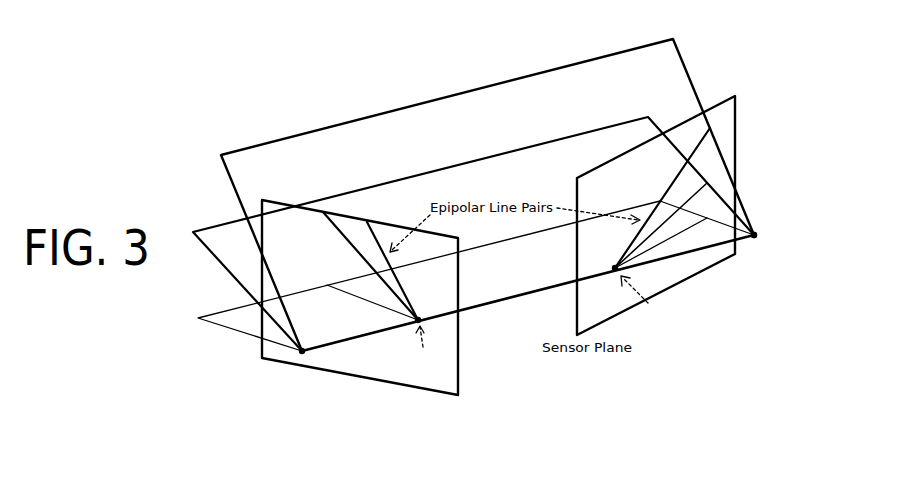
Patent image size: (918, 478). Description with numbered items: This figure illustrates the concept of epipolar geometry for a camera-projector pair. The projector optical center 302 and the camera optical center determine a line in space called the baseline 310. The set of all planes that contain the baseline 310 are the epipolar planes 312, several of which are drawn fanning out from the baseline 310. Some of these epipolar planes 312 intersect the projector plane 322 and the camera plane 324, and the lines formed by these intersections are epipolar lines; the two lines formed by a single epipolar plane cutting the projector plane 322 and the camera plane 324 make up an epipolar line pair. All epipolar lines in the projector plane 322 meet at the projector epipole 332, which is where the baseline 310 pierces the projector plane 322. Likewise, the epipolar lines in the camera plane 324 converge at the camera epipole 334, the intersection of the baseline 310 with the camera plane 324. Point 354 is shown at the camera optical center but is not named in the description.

The projector optical center 302 is at (297, 356).
The baseline 310 is at (501, 323).
The epipolar planes 312 is at (317, 147).
The projector plane 322 is at (369, 353).
The camera plane 324 is at (617, 303).
The projector epipole 332 is at (448, 373).
The camera epipole 334 is at (710, 327).
The camera optical center 354 is at (756, 290).